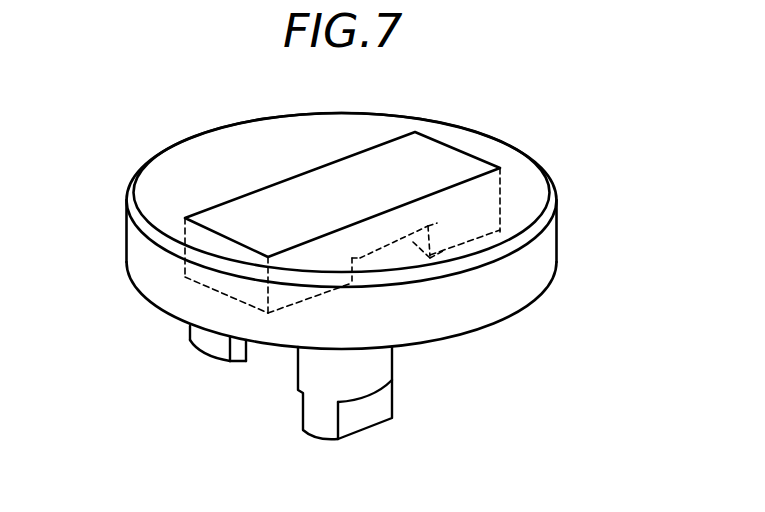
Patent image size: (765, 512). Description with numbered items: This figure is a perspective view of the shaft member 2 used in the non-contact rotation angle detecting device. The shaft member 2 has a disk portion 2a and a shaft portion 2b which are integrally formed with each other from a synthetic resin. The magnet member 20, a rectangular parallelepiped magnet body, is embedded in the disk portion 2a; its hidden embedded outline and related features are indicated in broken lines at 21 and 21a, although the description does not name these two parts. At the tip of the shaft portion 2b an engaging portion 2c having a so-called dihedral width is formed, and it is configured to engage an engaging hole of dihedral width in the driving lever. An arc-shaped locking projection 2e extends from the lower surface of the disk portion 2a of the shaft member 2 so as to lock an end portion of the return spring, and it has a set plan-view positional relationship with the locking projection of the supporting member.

The shaft member 2 is at (562, 249).
The disk portion 2a is at (512, 287).
The shaft portion 2b is at (407, 413).
The engaging portion 2c is at (375, 415).
The locking projection 2e is at (210, 343).
The magnet member 20 is at (427, 162).
The recess 21 is at (200, 290).
The protrusion 21a is at (447, 253).